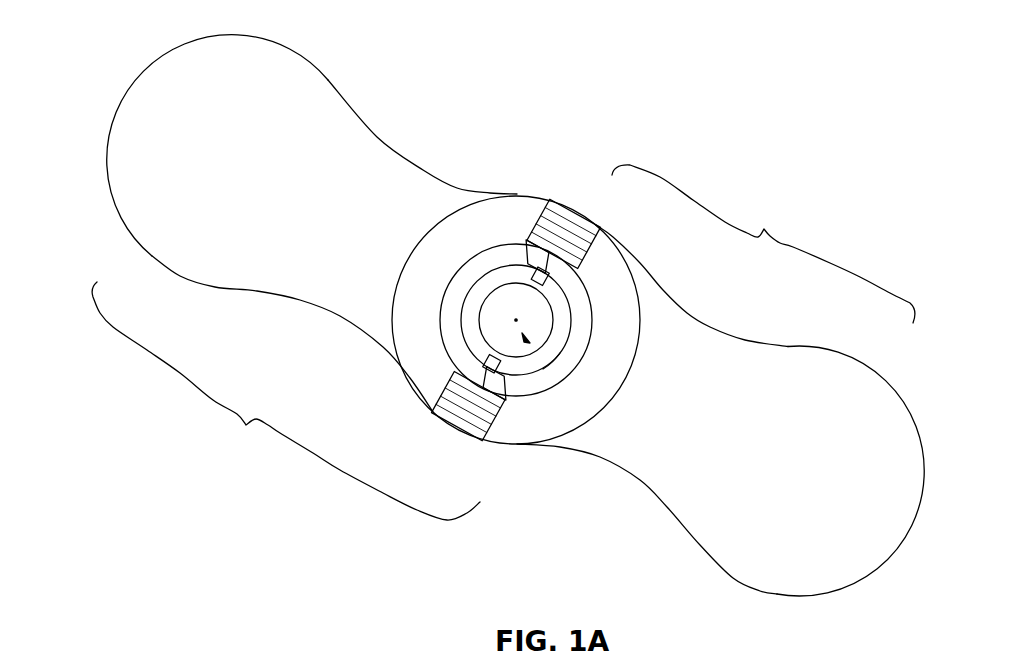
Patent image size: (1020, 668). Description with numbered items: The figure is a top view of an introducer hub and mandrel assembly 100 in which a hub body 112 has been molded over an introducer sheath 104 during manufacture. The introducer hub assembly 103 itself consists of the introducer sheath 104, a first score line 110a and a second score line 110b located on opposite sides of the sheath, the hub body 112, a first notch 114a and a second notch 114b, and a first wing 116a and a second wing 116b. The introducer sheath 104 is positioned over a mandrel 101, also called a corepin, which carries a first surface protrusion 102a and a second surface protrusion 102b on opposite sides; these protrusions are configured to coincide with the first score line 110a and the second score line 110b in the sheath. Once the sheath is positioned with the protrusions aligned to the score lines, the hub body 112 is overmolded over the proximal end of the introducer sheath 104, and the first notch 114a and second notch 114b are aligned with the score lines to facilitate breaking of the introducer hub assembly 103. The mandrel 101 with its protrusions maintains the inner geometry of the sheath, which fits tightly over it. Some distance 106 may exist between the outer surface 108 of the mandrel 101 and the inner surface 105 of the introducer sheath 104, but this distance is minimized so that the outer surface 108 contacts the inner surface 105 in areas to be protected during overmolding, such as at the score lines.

The introducer hub and mandrel assembly 100 is at (112, 42).
The mandrel 101 is at (487, 341).
The first surface protrusion 102a is at (486, 352).
The second surface protrusion 102b is at (537, 266).
The introducer hub assembly 103 is at (503, 342).
The introducer sheath 104 is at (580, 336).
The inner surface 105 is at (560, 353).
The distance 106 is at (547, 370).
The outer surface 108 is at (519, 326).
The first score line 110a is at (434, 397).
The second score line 110b is at (573, 271).
The hub body 112 is at (413, 342).
The first notch 114a is at (453, 433).
The second notch 114b is at (577, 204).
The first wing 116a is at (843, 377).
The second wing 116b is at (157, 237).